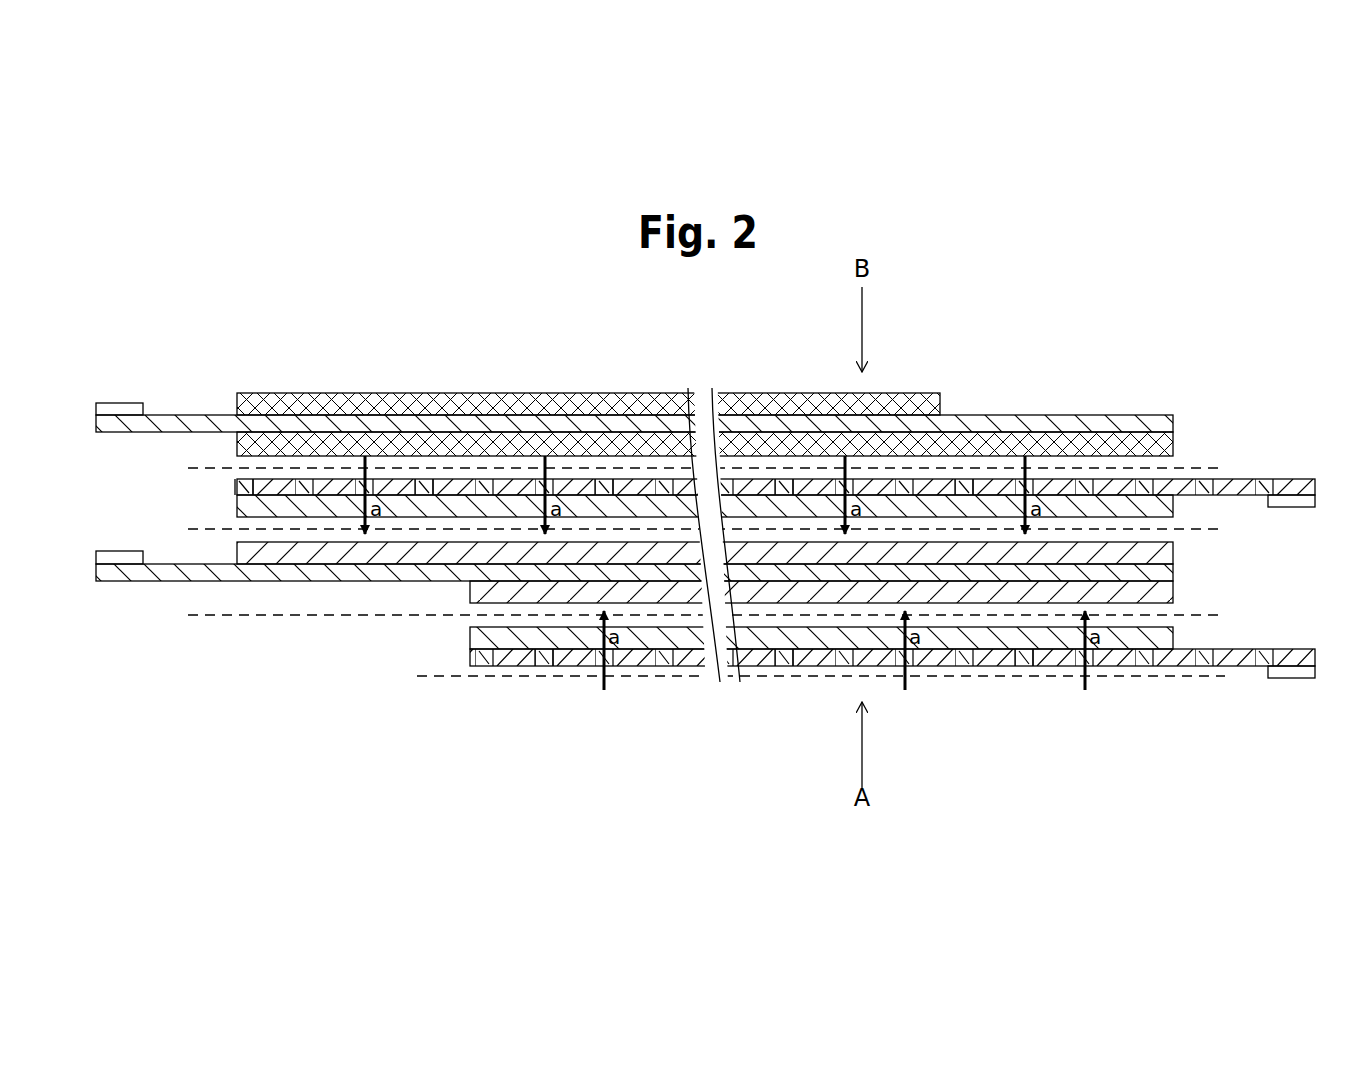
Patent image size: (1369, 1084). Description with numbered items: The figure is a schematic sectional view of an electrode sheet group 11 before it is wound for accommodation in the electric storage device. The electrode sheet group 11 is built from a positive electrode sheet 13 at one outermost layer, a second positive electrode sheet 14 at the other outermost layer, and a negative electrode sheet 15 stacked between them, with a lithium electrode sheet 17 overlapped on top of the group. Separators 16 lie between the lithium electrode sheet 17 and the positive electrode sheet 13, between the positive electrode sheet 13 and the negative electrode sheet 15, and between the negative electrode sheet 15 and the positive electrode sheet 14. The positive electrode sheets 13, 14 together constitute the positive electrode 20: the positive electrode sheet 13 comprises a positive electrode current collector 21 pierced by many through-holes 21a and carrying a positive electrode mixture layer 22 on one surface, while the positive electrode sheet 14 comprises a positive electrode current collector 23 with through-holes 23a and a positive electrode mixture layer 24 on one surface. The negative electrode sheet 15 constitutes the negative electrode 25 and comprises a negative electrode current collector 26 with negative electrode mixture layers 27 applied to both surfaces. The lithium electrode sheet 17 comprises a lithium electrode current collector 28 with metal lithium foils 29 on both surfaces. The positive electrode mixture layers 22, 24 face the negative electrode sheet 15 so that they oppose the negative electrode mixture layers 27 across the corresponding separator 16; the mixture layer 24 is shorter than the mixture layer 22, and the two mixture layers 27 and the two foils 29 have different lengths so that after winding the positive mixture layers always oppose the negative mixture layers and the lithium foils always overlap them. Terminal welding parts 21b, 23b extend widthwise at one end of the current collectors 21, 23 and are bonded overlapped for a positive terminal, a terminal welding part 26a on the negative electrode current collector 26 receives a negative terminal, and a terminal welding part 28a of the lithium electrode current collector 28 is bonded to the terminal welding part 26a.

The electrode sheet group 11 is at (307, 650).
The positive electrode sheet 13 is at (709, 500).
The positive electrode sheet 14 is at (829, 649).
The negative electrode sheet 15 is at (705, 571).
The separator 16 is at (1210, 467).
The lithium electrode sheet 17 is at (634, 379).
The positive electrode 20 is at (1285, 476).
The positive electrode current collector 21 is at (237, 489).
The through-hole 21a is at (422, 492).
The terminal welding part 21b is at (1295, 507).
The positive electrode mixture layer 22 is at (237, 512).
The positive electrode current collector 23 is at (510, 660).
The through-hole 23a is at (543, 662).
The terminal welding part 23b is at (1291, 680).
The positive electrode mixture layer 24 is at (487, 637).
The negative electrode 25 is at (150, 597).
The negative electrode current collector 26 is at (1180, 574).
The terminal welding part 26a is at (100, 556).
The negative electrode mixture layer 27 is at (1180, 548).
The lithium electrode current collector 28 is at (287, 425).
The terminal welding part 28a is at (100, 407).
The metal lithium foil 29 is at (263, 405).